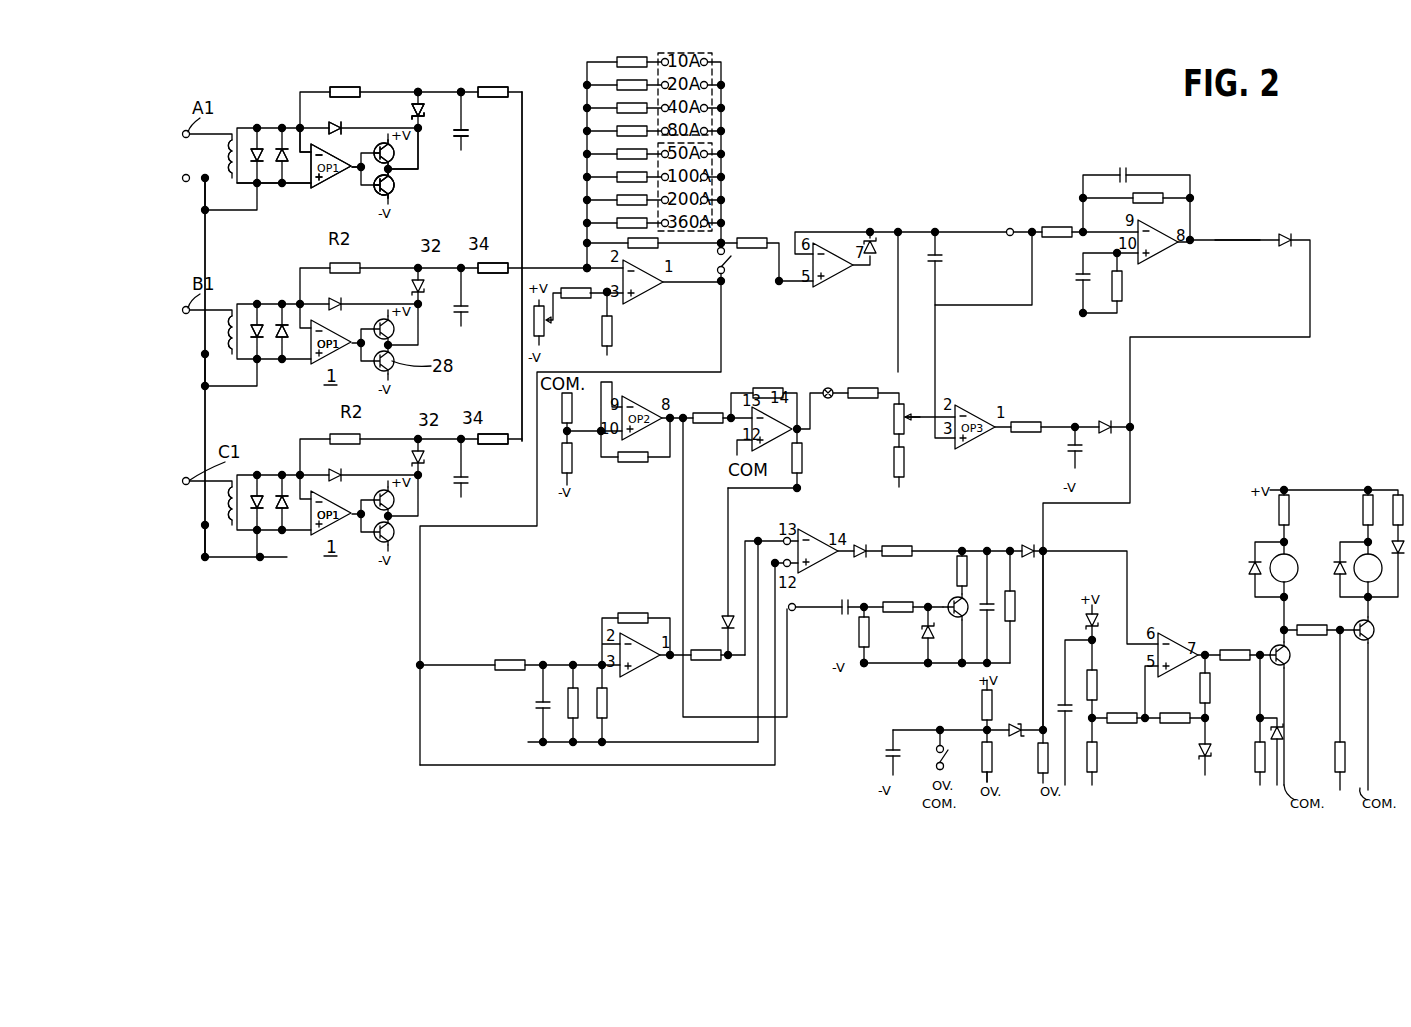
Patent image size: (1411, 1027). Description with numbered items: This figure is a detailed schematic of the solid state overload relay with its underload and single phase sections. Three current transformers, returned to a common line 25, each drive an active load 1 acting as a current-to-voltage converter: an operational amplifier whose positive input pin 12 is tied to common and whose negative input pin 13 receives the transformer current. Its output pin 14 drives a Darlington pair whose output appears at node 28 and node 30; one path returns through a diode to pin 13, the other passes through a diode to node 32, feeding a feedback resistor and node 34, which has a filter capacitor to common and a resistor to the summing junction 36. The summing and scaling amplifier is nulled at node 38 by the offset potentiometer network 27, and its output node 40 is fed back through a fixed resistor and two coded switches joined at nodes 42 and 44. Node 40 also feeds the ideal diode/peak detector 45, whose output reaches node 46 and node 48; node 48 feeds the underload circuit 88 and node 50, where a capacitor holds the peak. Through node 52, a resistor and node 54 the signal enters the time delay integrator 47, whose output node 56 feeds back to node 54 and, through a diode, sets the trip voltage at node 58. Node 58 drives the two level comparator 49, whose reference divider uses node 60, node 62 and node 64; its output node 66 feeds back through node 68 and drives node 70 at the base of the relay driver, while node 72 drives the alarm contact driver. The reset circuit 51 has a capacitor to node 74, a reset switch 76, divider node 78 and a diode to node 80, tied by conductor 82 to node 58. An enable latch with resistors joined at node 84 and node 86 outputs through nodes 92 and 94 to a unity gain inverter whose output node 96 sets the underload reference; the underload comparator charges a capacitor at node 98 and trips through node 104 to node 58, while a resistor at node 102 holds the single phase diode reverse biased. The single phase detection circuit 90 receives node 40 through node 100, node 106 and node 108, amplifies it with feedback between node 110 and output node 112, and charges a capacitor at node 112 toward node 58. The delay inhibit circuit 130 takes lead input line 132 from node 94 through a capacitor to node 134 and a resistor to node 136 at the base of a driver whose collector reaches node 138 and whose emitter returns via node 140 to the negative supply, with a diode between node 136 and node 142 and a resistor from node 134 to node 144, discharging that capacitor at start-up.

The active load 1 is at (337, 209).
The positive input pin 12 is at (312, 184).
The negative input pin 13 is at (312, 150).
The output pin 14 is at (358, 166).
The common line 25 is at (206, 248).
The offset potentiometer resistor network 27 is at (589, 360).
The node 28 is at (392, 185).
The node 30 is at (422, 132).
The node 32 is at (418, 90).
The node 34 is at (461, 90).
The summing junction 36 is at (521, 245).
The node 38 is at (610, 296).
The node 40 is at (724, 285).
The node 42 is at (724, 240).
The node 44 is at (583, 266).
The ideal diode/peak detector 45 is at (843, 255).
The node 46 is at (871, 228).
The time delay integrator 47 is at (1167, 221).
The node 48 is at (898, 228).
The two level comparator 49 is at (1190, 700).
The node 50 is at (935, 228).
The reset circuit 51 is at (927, 761).
The node 52 is at (1033, 228).
The node 54 is at (1086, 230).
The node 56 is at (1193, 238).
The node 58 is at (1046, 549).
The node 60 is at (1090, 637).
The node 62 is at (1095, 722).
The node 64 is at (1145, 722).
The node 66 is at (560, 94).
The node 68 is at (1208, 719).
The node 70 is at (1262, 652).
The node 72 is at (1286, 627).
The node 74 is at (915, 730).
The reset switch 76 is at (945, 765).
The node 78 is at (990, 727).
The node 80 is at (1042, 745).
The conductor 82 is at (1046, 585).
The node 84 is at (566, 436).
The node 86 is at (600, 435).
The underload circuit 88 is at (862, 434).
The single phase detection circuit 90 is at (775, 525).
The node 92 is at (684, 415).
The node 94 is at (731, 415).
The node 96 is at (800, 433).
The node 98 is at (1076, 423).
The node 100 is at (421, 662).
The node 102 is at (1008, 547).
The node 104 is at (1133, 427).
The node 106 is at (543, 661).
The node 108 is at (573, 661).
The node 110 is at (602, 640).
The node 112 is at (987, 547).
The delay inhibit circuit 130 is at (919, 636).
The lead input line 132 is at (683, 522).
The node 134 is at (866, 603).
The node 136 is at (930, 603).
The node 138 is at (962, 547).
The node 140 is at (962, 668).
The node 142 is at (928, 668).
The node 144 is at (865, 668).